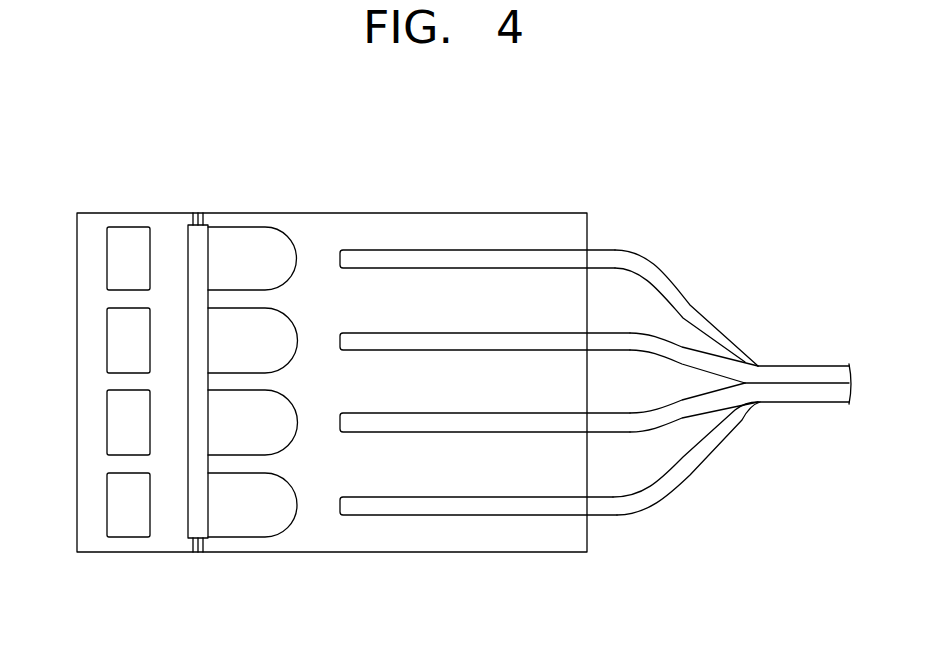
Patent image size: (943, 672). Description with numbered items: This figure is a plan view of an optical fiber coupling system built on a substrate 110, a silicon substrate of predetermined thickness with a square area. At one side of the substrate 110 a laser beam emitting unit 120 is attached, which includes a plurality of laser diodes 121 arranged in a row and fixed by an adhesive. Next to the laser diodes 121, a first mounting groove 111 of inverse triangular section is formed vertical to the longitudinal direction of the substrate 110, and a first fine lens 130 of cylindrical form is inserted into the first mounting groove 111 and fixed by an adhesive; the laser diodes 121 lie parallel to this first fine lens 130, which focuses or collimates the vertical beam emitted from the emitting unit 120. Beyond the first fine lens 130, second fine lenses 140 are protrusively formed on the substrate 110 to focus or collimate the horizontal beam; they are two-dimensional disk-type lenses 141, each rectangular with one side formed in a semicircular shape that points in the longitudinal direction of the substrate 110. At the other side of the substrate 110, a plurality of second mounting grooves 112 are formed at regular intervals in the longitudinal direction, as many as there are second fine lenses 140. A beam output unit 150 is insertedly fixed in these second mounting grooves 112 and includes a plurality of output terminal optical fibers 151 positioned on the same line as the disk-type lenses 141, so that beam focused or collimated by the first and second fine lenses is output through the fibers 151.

The substrate 110 is at (565, 210).
The first mounting groove 111 is at (200, 553).
The second mounting groove 112 is at (493, 333).
The laser beam emitting unit 120 is at (86, 330).
The laser diode 121 is at (114, 264).
The first fine lens 130 is at (180, 230).
The second fine lens 140 is at (288, 371).
The disk-type lens 141 is at (282, 335).
The beam output unit 150 is at (732, 386).
The output terminal optical fiber 151 is at (645, 348).